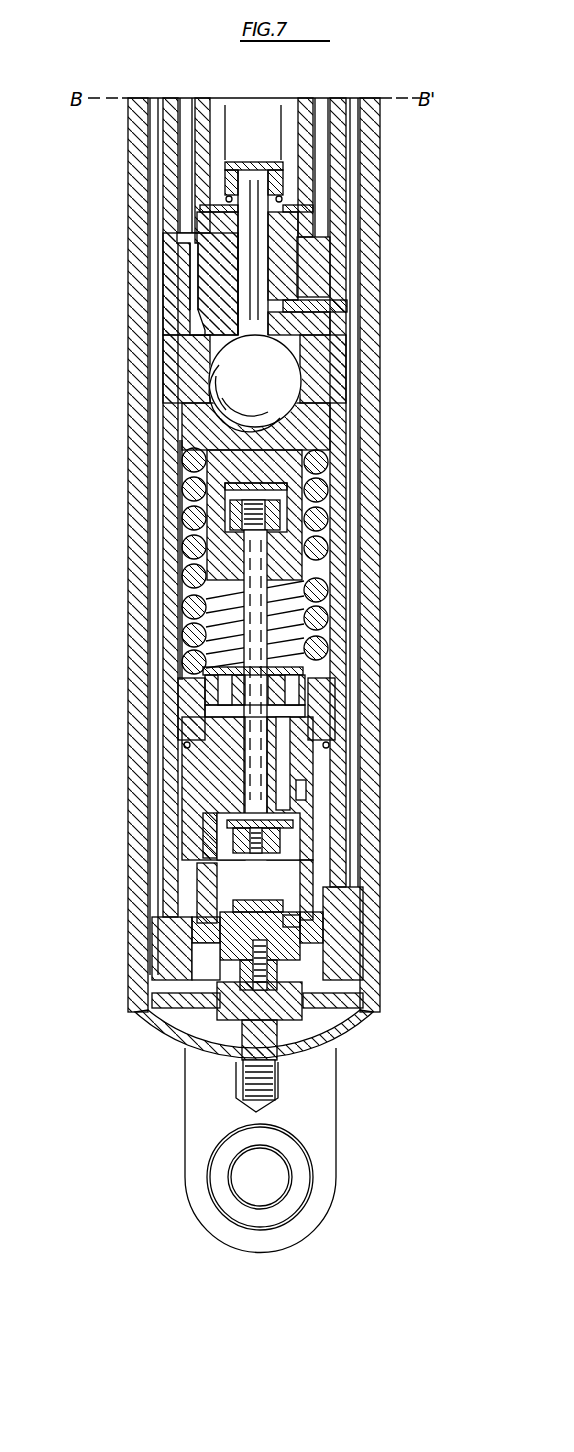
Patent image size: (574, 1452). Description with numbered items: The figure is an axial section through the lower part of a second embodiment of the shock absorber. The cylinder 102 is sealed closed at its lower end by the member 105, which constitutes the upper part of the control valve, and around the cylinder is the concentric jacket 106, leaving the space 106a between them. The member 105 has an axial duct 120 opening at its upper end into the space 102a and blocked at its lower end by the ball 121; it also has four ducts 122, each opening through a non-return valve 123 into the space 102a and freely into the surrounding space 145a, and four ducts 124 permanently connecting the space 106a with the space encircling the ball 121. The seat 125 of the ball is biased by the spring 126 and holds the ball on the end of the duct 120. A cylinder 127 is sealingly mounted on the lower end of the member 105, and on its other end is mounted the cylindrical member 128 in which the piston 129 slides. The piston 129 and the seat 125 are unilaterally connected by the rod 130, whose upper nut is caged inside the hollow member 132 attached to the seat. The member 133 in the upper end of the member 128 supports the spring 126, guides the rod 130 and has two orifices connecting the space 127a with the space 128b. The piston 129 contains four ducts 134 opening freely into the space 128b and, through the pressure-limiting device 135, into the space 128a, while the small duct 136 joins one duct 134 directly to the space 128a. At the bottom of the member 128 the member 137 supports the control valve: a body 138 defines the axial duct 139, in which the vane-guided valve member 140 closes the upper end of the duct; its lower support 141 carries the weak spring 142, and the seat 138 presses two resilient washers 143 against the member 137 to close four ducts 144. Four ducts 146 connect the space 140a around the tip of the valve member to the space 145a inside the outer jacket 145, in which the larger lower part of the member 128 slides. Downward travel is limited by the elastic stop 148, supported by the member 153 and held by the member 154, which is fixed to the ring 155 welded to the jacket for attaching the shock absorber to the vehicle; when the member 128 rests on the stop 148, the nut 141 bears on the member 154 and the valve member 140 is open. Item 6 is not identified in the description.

The outer tube 6 is at (343, 425).
The cylinder 102 is at (298, 120).
The space 102a is at (288, 105).
The member 105 is at (330, 300).
The jacket 106 is at (335, 100).
The space 106a is at (181, 110).
The axial duct 120 is at (250, 164).
The ball 121 is at (266, 363).
The ducts 122 is at (288, 277).
The non-return valve 123 is at (305, 208).
The ducts 124 is at (190, 262).
The seat 125 is at (268, 408).
The spring 126 is at (177, 462).
The cylinder 127 is at (170, 532).
The space 127a is at (185, 565).
The cylindrical member 128 is at (350, 795).
The space 128a is at (208, 830).
The space 128b is at (297, 702).
The piston 129 is at (210, 770).
The rod 130 is at (253, 612).
The hollow member 132 is at (295, 518).
The member 133 is at (258, 530).
The ducts 134 is at (287, 755).
The device 135 is at (296, 832).
The small diameter duct 136 is at (300, 793).
The member 137 is at (215, 868).
The body 138 is at (284, 915).
The axial duct 139 is at (347, 915).
The valve member 140 is at (252, 910).
The space 140a is at (205, 970).
The support 141 is at (266, 1021).
The spring 142 is at (285, 968).
The resilient washers 143 is at (195, 945).
The ducts 144 is at (175, 928).
The outer jacket 145 is at (372, 986).
The space 145a is at (158, 855).
The ducts 146 is at (160, 905).
The elastic stop 148 is at (150, 1001).
The member 153 is at (288, 1058).
The member 154 is at (236, 1068).
The ring 155 is at (318, 1133).